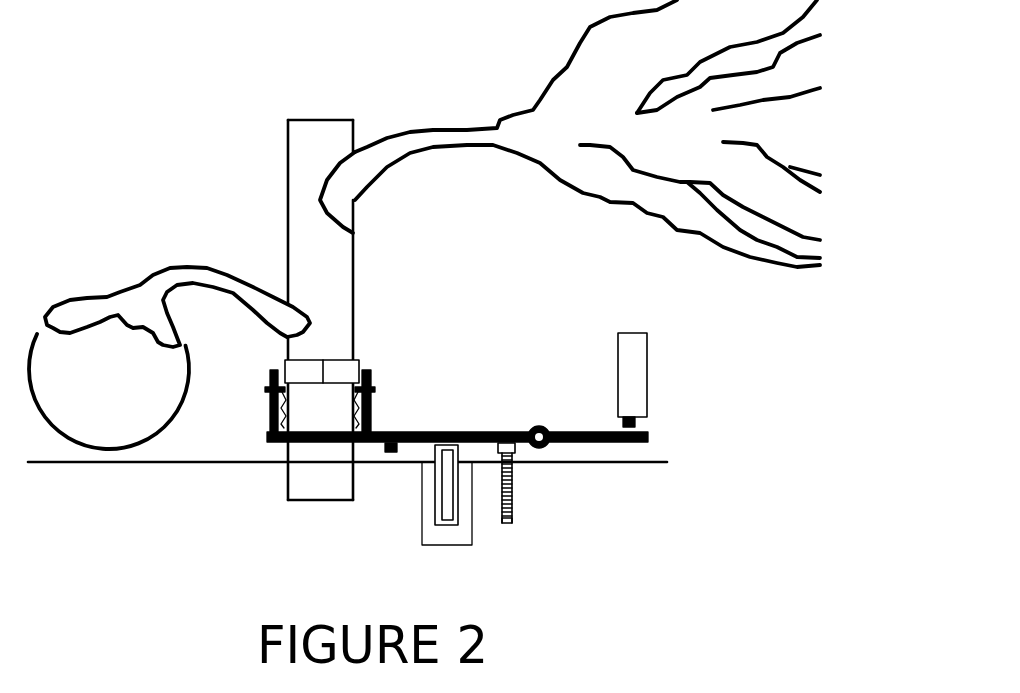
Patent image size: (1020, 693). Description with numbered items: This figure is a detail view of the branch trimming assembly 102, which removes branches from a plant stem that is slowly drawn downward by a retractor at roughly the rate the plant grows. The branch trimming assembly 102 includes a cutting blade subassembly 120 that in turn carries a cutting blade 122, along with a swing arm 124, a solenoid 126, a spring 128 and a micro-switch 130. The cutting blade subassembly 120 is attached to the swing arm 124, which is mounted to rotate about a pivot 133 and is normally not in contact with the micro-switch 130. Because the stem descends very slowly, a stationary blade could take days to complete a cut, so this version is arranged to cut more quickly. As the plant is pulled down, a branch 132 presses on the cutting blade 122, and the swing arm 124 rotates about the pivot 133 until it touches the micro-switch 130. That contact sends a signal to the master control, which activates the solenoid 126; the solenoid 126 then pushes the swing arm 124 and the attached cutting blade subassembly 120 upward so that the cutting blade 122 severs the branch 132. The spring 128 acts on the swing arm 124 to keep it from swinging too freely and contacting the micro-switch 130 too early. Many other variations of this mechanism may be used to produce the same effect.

The branch trimming assembly 102 is at (395, 258).
The cutting blade subassembly 120 is at (373, 370).
The cutting blade 122 is at (352, 367).
The swing arm 124 is at (413, 431).
The solenoid 126 is at (465, 532).
The spring 128 is at (510, 475).
The micro-switch 130 is at (630, 390).
The branch 132 is at (148, 292).
The pivot 133 is at (537, 427).